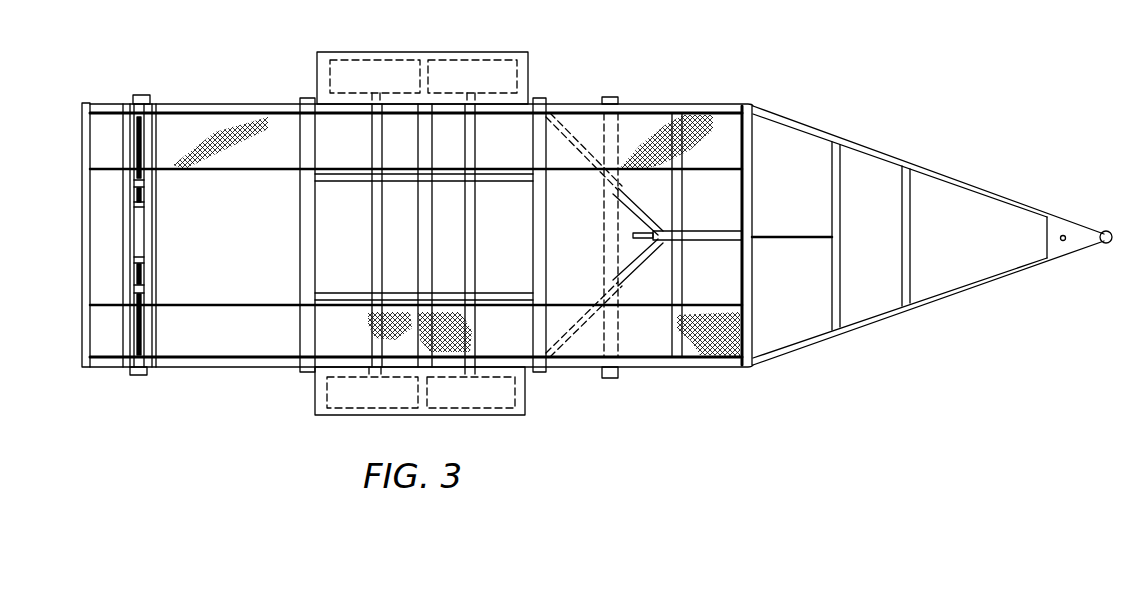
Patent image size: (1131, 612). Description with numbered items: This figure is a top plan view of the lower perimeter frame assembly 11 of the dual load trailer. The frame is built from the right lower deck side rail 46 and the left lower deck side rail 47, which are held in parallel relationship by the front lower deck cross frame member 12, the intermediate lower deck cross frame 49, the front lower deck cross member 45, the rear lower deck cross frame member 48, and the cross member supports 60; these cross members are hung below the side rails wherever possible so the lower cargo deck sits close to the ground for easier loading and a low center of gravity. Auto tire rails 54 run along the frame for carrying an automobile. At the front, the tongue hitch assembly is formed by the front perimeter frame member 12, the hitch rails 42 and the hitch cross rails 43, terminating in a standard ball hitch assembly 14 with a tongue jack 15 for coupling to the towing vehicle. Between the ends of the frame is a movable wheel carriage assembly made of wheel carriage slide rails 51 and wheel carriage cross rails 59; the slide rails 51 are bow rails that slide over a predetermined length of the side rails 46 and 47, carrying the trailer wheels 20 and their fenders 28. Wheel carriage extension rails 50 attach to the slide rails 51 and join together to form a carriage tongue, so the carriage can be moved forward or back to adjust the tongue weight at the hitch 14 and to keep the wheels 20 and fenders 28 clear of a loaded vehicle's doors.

The lower perimeter frame assembly 11 is at (767, 418).
The front lower deck cross frame member 12 is at (748, 177).
The ball hitch assembly 14 is at (1112, 236).
The tongue jack 15 is at (1061, 243).
The trailer wheels 20 is at (397, 65).
The fenders 28 is at (437, 52).
The hitch rails 42 is at (968, 187).
The hitch cross rails 43 is at (835, 227).
The front lower deck cross member 45 is at (606, 224).
The right lower deck side rail 46 is at (588, 375).
The left lower deck side rail 47 is at (270, 105).
The rear lower deck cross frame member 48 is at (82, 185).
The intermediate lower deck cross frame 49 is at (687, 200).
The wheel carriage extension rails 50 is at (653, 214).
The wheel carriage slide rails 51 is at (540, 98).
The auto tire rails 54 is at (272, 162).
The wheel carriage cross rails 59 is at (308, 238).
The cross member supports 60 is at (128, 233).